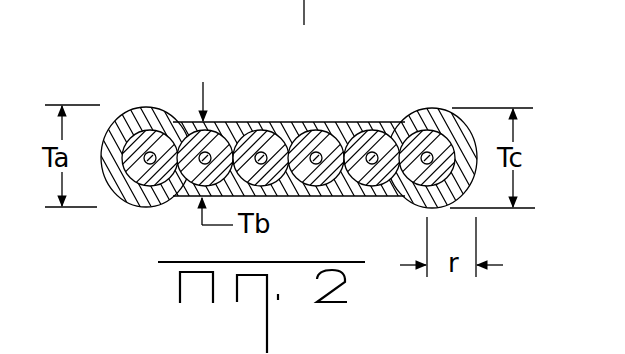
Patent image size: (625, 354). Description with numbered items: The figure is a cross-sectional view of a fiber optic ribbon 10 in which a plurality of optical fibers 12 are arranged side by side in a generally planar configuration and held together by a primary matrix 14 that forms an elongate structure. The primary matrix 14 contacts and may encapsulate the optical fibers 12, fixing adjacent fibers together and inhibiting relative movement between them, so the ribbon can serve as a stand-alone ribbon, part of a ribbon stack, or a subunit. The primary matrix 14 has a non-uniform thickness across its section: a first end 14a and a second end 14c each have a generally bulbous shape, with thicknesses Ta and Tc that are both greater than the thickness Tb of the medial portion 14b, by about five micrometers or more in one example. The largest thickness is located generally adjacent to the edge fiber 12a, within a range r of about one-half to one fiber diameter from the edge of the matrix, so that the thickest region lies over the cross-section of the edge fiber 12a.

The fiber optic ribbon 10 is at (294, 130).
The optical fibers 12 is at (261, 128).
The edge fiber 12a is at (433, 125).
The primary matrix 14 is at (294, 141).
The first end 14a is at (153, 204).
The medial portion 14b is at (320, 187).
The second end 14c is at (423, 118).